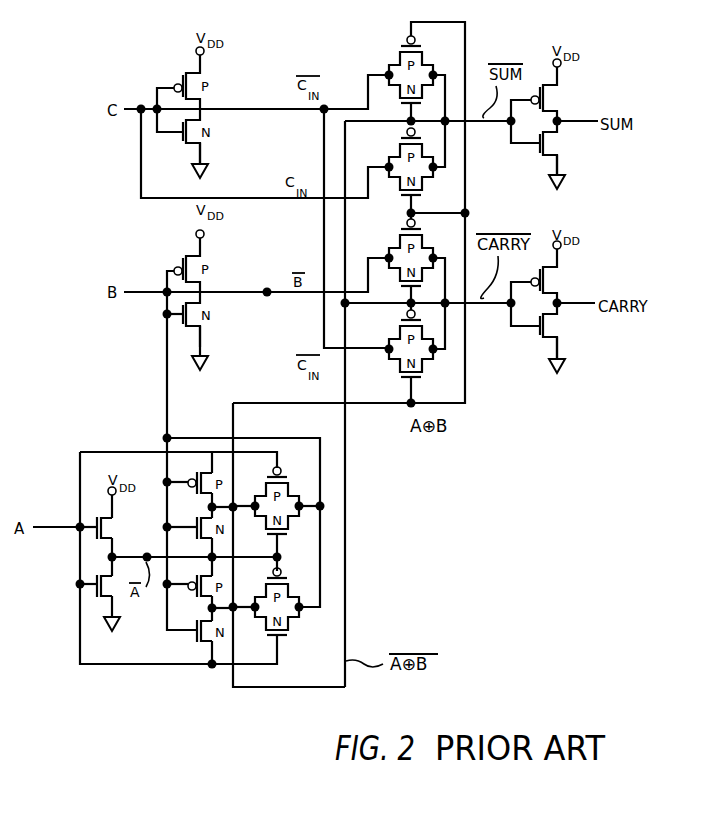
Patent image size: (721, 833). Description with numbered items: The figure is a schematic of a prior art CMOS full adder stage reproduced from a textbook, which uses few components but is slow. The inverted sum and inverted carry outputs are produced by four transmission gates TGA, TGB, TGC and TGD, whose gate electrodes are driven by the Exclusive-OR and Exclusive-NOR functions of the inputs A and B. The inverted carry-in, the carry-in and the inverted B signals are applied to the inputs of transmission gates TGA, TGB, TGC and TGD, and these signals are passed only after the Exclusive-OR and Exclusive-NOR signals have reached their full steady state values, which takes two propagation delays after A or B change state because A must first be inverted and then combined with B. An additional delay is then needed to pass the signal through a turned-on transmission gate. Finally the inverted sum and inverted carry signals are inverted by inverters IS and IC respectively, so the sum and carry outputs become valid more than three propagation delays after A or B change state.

The transmission gate TGA is at (394, 69).
The transmission gate TGB is at (397, 160).
The transmission gate TGC is at (399, 252).
The transmission gate TGD is at (399, 343).
The inverter IS is at (526, 137).
The inverter IC is at (525, 322).